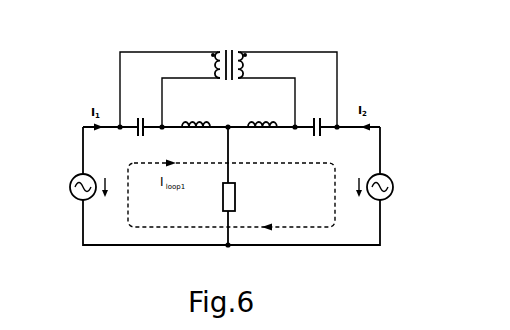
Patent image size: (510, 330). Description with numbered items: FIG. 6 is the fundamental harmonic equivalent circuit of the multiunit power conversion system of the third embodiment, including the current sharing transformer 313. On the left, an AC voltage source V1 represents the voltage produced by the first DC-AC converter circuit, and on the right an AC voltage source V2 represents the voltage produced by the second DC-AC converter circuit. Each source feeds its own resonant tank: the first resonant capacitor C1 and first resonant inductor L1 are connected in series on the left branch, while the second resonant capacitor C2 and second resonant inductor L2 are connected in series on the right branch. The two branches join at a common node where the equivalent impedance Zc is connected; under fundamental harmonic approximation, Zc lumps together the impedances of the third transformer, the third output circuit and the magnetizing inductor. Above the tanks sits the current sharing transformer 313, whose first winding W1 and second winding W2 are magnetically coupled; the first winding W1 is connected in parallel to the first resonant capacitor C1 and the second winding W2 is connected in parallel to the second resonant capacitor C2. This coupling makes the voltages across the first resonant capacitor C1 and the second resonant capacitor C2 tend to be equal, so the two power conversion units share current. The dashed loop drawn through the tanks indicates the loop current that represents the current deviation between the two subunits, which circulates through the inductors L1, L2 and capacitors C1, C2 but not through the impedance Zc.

The current sharing transformer 313 is at (242, 48).
The first winding W1 is at (207, 65).
The second winding W2 is at (256, 65).
The first resonant capacitor C1 is at (140, 134).
The second resonant capacitor C2 is at (318, 134).
The first resonant inductor L1 is at (196, 136).
The second resonant inductor L2 is at (262, 136).
The equivalent impedance Zc is at (241, 186).
The AC voltage V1 is at (77, 186).
The AC voltage V2 is at (378, 178).